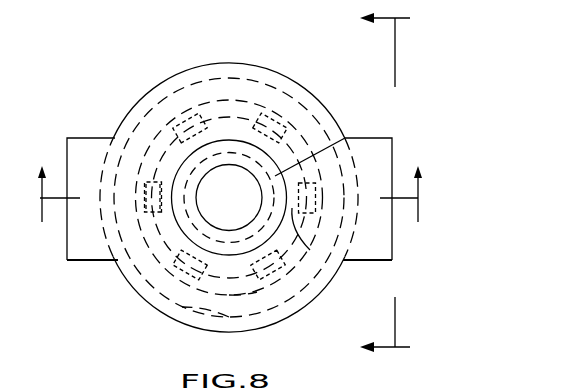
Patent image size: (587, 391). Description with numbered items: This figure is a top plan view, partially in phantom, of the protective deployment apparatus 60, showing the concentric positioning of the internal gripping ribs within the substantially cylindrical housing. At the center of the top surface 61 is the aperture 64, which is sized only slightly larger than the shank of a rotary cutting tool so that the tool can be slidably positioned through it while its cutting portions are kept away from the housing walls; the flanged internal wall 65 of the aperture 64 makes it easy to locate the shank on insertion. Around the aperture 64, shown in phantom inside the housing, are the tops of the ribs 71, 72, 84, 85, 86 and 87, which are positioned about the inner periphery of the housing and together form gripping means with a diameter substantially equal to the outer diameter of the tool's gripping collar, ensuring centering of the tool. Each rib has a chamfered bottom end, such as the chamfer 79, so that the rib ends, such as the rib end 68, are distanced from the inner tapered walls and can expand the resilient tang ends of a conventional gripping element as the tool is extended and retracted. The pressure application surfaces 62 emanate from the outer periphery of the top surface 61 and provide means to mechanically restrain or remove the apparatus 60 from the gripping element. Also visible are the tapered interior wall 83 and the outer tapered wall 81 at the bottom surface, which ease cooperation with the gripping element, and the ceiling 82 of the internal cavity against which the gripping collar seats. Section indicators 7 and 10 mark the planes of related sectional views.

The section line 7- 7 is at (230, 205).
The section line 10- 10 is at (398, 182).
The protective deployment apparatus 60 is at (346, 130).
The top surface 61 is at (345, 138).
The pressure application surface 62 is at (87, 238).
The aperture 64 is at (231, 164).
The flanged internal wall 65 is at (264, 162).
The rib end 68 is at (157, 207).
The rib 71 is at (152, 183).
The rib 72 is at (317, 192).
The chamfer 79 is at (143, 193).
The outer tapered wall 81 is at (182, 307).
The ceiling 82 is at (310, 250).
The inner tapered wall 83 is at (270, 267).
The rib 84 is at (190, 123).
The rib 85 is at (273, 126).
The rib 86 is at (257, 292).
The rib 87 is at (182, 272).